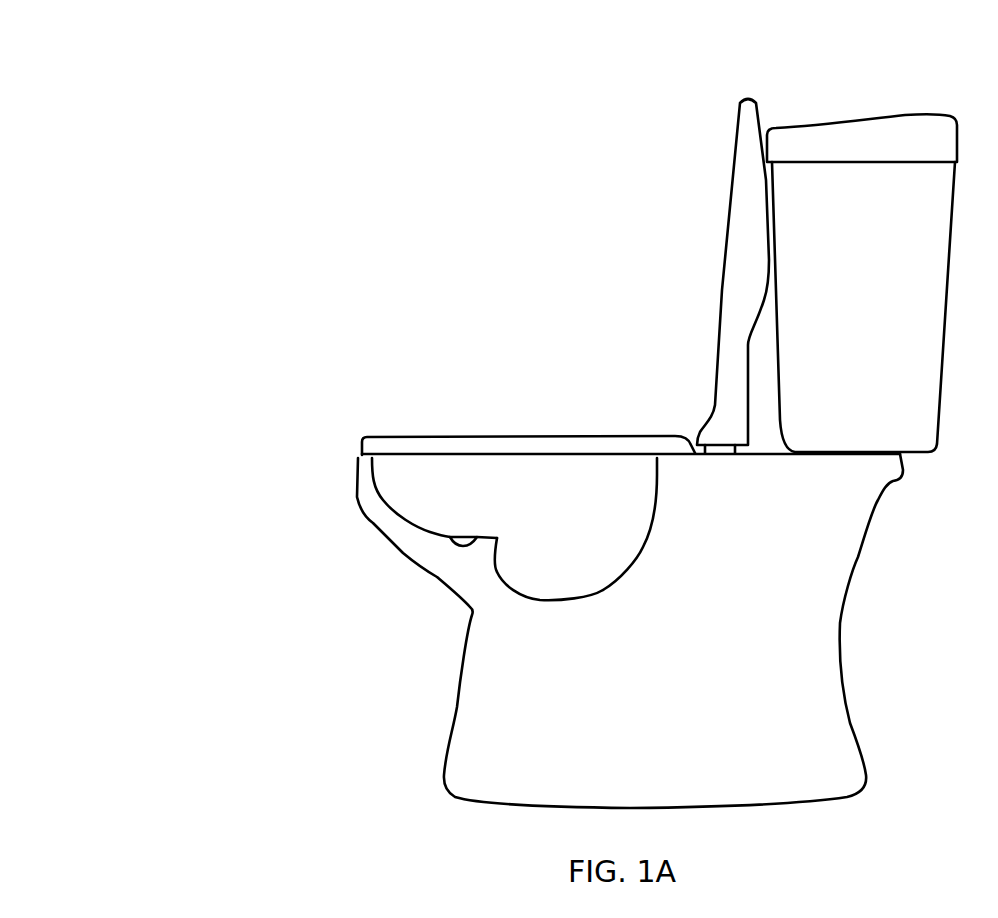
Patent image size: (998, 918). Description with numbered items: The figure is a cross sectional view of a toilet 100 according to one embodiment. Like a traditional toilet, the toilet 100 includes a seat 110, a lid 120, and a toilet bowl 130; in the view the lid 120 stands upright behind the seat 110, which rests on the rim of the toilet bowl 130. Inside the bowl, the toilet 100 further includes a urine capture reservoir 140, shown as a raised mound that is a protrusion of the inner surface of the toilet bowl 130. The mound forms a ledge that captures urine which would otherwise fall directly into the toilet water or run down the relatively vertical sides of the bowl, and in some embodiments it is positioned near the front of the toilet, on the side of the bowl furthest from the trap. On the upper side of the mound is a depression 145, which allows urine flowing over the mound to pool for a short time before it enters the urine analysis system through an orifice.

The toilet 100 is at (155, 75).
The seat 110 is at (452, 445).
The lid 120 is at (740, 223).
The toilet bowl 130 is at (627, 533).
The urine capture reservoir 140 is at (503, 542).
The depression 145 is at (457, 547).